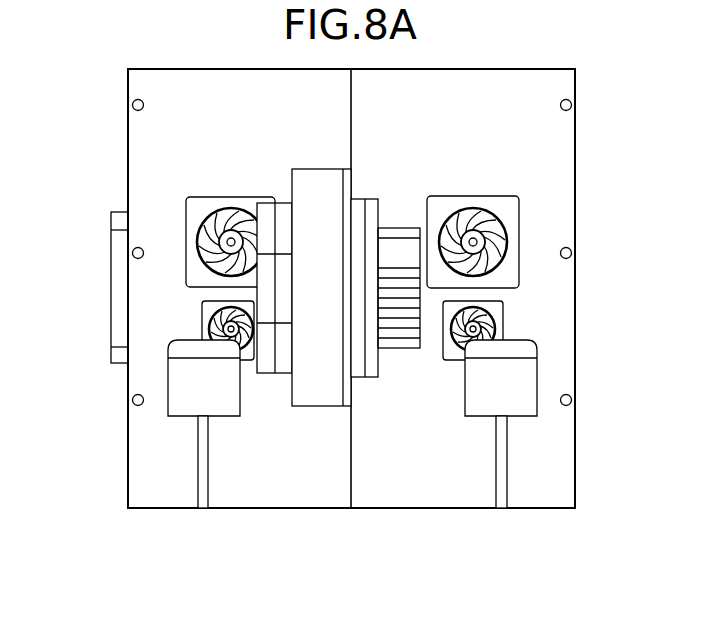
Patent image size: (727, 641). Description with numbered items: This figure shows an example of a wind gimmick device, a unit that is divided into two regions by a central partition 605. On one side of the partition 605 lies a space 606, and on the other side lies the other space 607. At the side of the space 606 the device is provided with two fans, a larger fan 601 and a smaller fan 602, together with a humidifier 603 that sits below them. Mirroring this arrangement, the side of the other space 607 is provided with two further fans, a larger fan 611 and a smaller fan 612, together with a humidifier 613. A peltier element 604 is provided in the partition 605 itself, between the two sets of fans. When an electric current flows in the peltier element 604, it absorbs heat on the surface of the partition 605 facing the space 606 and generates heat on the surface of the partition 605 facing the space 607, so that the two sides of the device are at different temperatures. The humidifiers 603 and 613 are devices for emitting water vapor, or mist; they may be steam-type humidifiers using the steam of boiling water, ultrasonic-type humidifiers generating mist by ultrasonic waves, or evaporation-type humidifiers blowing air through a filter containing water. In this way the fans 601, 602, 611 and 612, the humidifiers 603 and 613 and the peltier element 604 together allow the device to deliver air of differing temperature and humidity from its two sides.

The fan 601 is at (519, 222).
The fan 602 is at (503, 315).
The humidifier 603 is at (537, 373).
The peltier element 604 is at (320, 388).
The partition 605 is at (353, 472).
The space 606 is at (473, 482).
The space 607 is at (232, 483).
The fan 611 is at (186, 215).
The fan 612 is at (202, 322).
The humidifier 613 is at (168, 375).